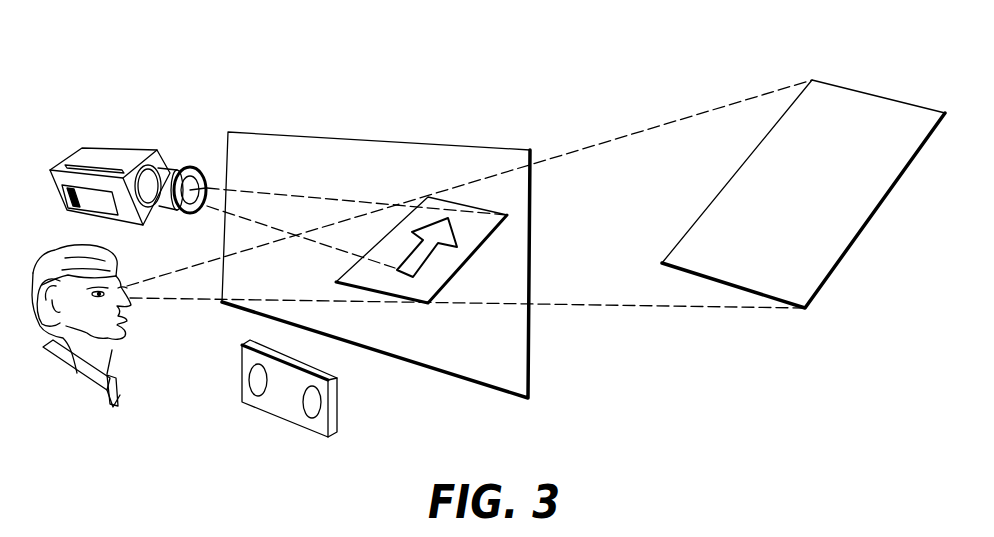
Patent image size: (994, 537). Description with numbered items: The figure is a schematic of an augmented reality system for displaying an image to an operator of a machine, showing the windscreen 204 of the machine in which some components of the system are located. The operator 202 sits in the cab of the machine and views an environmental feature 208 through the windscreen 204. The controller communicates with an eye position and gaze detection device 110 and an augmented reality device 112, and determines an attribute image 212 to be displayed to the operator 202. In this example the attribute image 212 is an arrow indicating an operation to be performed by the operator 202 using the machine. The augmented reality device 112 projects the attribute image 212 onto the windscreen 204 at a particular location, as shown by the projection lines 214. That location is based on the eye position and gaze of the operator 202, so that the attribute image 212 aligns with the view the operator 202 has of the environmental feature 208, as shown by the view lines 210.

The eye position and gaze detection device 110 is at (272, 413).
The augmented reality device 112 is at (120, 146).
The operator 202 is at (77, 373).
The windscreen 204 is at (497, 355).
The environmental feature 208 is at (873, 93).
The view lines 210 is at (640, 133).
The attribute image 212 is at (452, 238).
The projection lines 214 is at (376, 236).